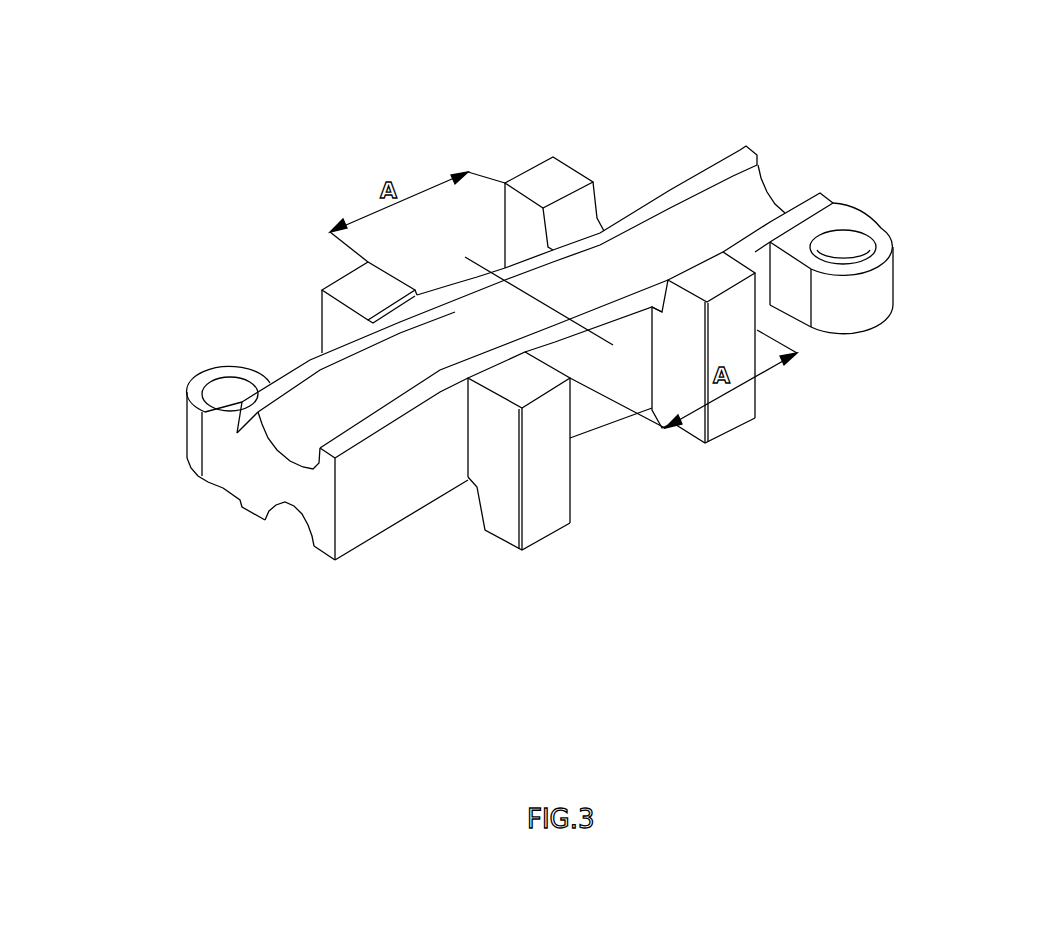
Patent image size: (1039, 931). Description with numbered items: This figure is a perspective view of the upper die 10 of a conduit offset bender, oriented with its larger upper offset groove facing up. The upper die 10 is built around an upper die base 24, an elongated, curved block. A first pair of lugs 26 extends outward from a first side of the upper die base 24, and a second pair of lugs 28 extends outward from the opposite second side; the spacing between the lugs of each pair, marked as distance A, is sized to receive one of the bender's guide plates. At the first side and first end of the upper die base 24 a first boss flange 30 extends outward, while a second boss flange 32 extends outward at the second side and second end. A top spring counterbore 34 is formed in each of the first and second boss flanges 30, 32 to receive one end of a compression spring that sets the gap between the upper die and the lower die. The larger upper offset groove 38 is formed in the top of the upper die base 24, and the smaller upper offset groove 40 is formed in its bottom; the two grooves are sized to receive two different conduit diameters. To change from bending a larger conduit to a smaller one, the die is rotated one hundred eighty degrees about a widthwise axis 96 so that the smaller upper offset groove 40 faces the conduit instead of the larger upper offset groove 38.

The upper die 10 is at (882, 123).
The upper die base 24 is at (393, 477).
The first pair of lugs 26 is at (542, 498).
The second pair of lugs 28 is at (322, 290).
The first boss flange 30 is at (865, 298).
The second boss flange 32 is at (197, 378).
The top spring counterbore 34 is at (217, 395).
The larger upper offset groove 38 is at (755, 185).
The smaller upper offset groove 40 is at (288, 523).
The widthwise axis 96 is at (603, 342).